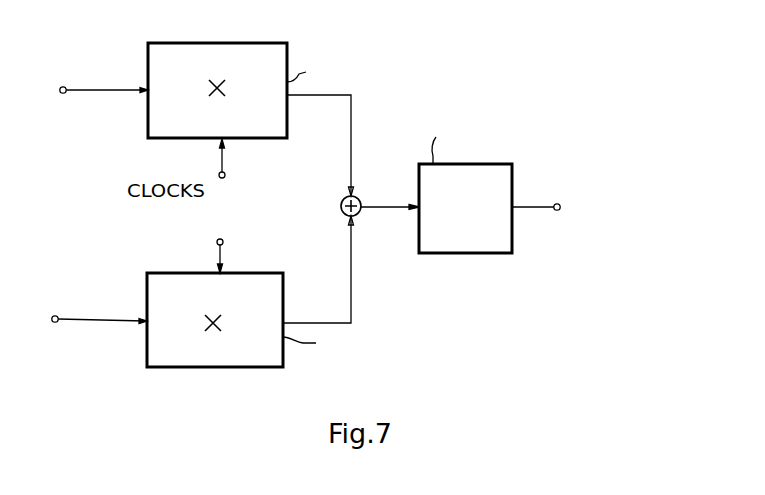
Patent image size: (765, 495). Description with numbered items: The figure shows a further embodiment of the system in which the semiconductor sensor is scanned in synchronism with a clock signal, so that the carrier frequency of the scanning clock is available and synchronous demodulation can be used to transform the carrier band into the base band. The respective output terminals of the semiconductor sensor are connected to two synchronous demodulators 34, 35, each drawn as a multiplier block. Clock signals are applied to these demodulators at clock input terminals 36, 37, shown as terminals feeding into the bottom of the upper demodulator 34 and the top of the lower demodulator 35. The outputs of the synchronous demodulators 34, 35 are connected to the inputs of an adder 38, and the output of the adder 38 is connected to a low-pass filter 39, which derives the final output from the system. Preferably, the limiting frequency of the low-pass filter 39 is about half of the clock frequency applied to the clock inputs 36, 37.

The synchronous demodulator 34 is at (256, 106).
The synchronous demodulator 35 is at (257, 296).
The clock input terminal 36 is at (205, 191).
The clock input terminal 37 is at (202, 203).
The adder 38 is at (360, 199).
The low-pass filter 39 is at (534, 177).